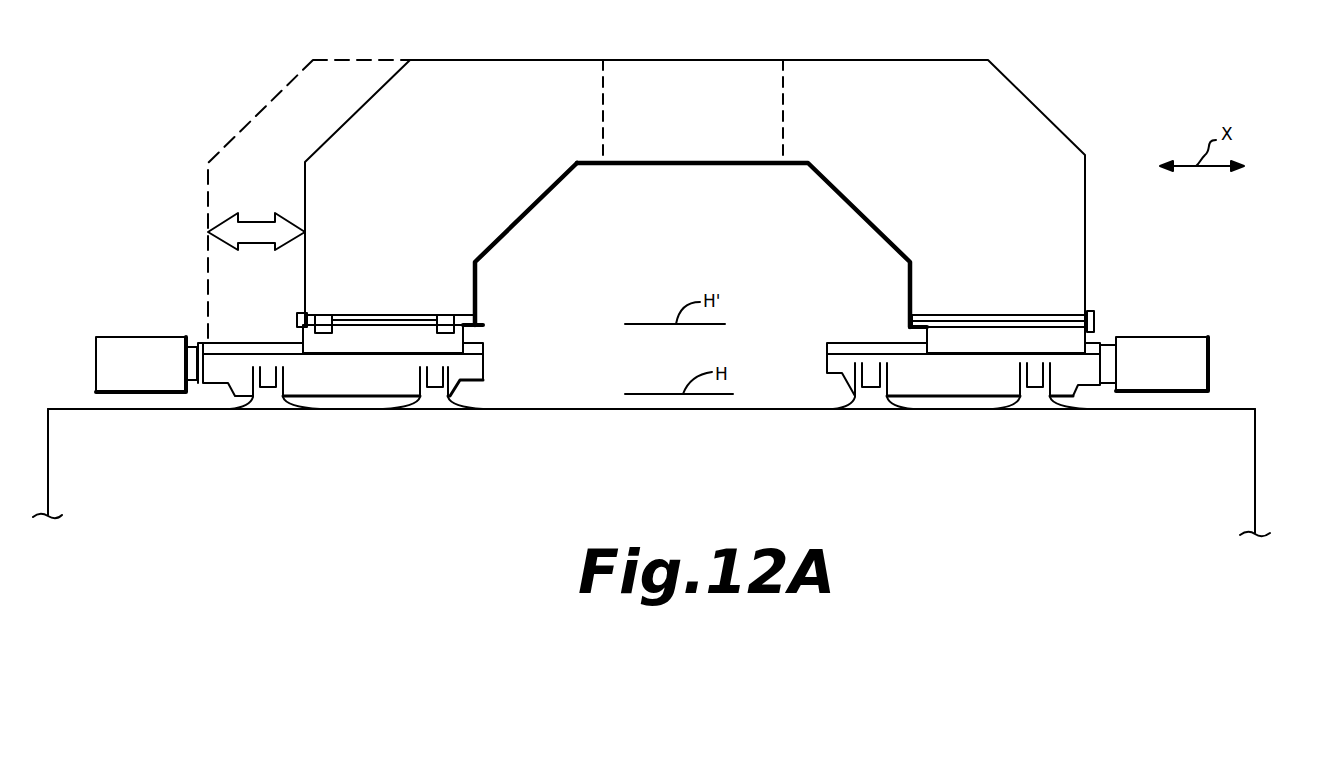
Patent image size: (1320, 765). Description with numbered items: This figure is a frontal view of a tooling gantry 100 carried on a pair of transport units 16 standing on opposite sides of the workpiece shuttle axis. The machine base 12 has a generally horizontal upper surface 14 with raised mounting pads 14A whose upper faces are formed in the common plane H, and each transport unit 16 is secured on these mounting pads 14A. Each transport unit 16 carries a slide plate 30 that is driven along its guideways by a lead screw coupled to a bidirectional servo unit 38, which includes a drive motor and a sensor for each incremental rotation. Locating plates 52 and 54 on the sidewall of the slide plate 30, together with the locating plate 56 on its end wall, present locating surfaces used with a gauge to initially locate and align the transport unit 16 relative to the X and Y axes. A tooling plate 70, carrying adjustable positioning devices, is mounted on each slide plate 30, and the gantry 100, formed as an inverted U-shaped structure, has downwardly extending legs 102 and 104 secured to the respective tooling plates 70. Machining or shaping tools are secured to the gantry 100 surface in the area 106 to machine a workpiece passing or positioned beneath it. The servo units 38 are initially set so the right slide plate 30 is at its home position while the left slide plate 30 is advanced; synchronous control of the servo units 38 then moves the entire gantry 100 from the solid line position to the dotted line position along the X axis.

The tooling gantry 100 is at (850, 61).
The area 106 is at (717, 131).
The leg 102 is at (478, 270).
The leg 104 is at (912, 272).
The tooling plate 70 is at (480, 318).
The slide plate 30 is at (470, 332).
The locating plate 52 is at (322, 313).
The locating plate 54 is at (448, 313).
The locating plate 56 is at (298, 318).
The transport unit 16 is at (187, 313).
The mounting pad 14A is at (458, 401).
The upper surface 14 is at (1225, 409).
The base 12 is at (1257, 440).
The servo unit 38 is at (96, 362).